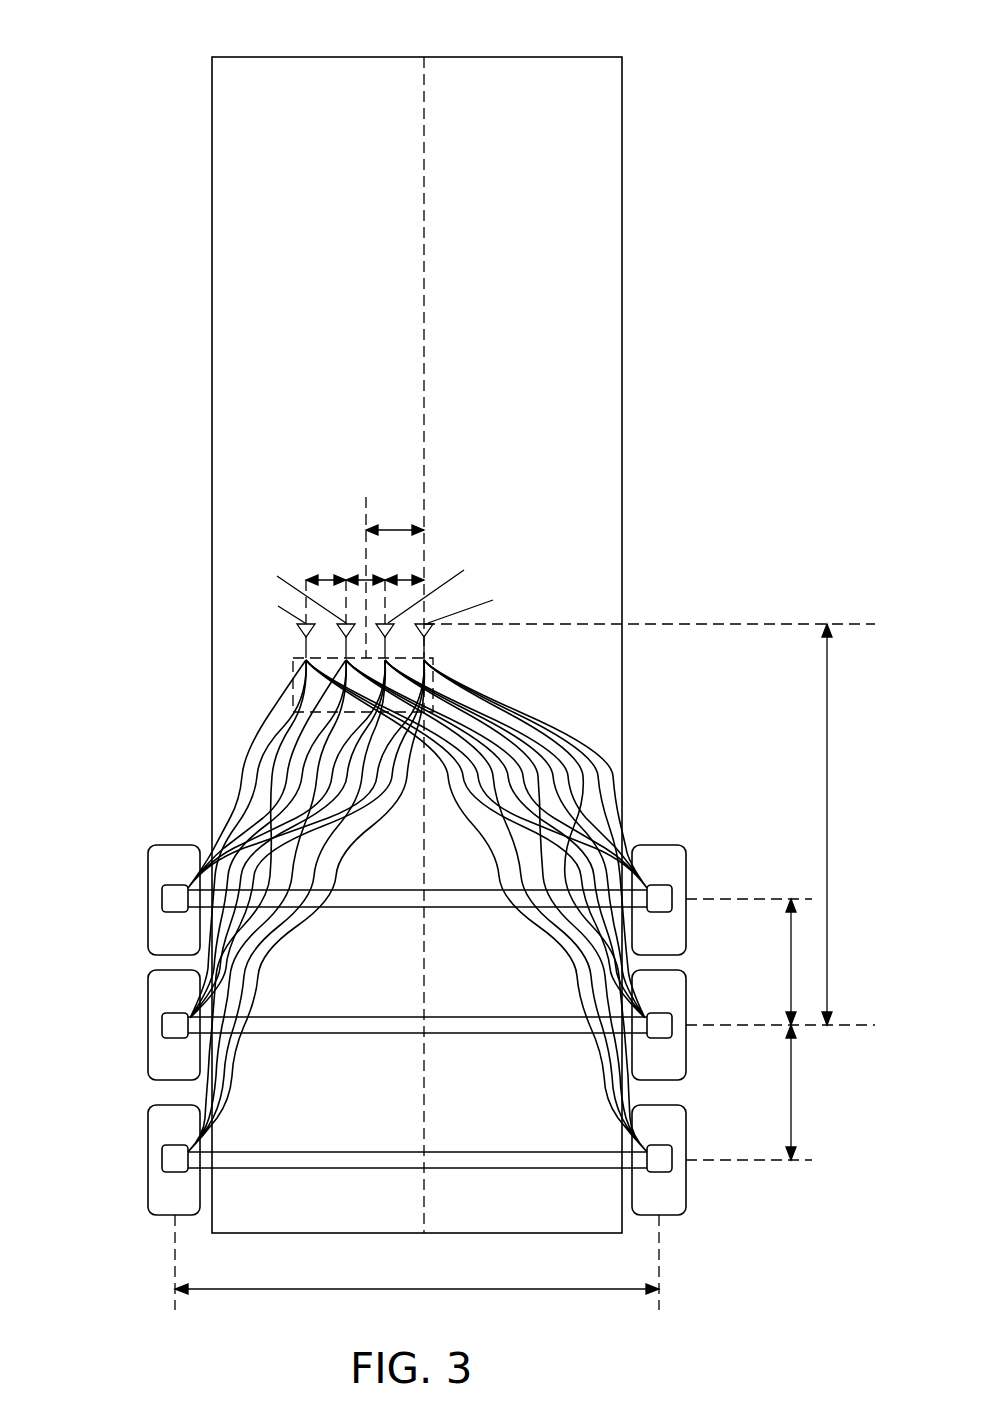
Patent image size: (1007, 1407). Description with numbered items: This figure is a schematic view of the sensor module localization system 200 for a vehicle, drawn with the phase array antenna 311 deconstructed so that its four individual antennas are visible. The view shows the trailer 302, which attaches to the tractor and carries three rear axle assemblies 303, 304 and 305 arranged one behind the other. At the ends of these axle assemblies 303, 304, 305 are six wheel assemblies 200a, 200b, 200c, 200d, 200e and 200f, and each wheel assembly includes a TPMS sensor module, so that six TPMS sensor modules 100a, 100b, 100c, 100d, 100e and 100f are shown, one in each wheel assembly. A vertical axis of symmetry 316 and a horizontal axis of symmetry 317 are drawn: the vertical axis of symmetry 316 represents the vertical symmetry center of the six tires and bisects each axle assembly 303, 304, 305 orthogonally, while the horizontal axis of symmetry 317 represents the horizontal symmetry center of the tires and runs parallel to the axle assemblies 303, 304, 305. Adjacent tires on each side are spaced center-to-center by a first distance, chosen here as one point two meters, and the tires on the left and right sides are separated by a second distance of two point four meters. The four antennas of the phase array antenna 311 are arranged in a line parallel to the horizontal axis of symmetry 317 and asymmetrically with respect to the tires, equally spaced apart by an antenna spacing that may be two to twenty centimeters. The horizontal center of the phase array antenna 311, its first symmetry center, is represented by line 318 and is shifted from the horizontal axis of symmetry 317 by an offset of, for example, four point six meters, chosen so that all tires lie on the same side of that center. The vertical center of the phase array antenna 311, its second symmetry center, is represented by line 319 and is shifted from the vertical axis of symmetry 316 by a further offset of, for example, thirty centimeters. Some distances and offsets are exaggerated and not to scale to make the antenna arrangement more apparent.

The sensor module localization system 200 is at (106, 46).
The trailer 302 is at (622, 392).
The vertical axis of symmetry 316 is at (424, 188).
The horizontal center of the phase array antenna 318 is at (723, 622).
The vertical center of the phase array antenna 319 is at (364, 503).
The phase array antenna 311 is at (280, 642).
The rear axle assembly 303 is at (390, 909).
The rear axle assembly 304 is at (392, 1035).
The rear axle assembly 305 is at (390, 1170).
The horizontal axis of symmetry 317 is at (857, 1028).
The TPMS sensor module 100a is at (672, 897).
The TPMS sensor module 100b is at (162, 897).
The TPMS sensor module 100c is at (672, 1022).
The TPMS sensor module 100d is at (162, 1025).
The TPMS sensor module 100e is at (672, 1156).
The TPMS sensor module 100f is at (162, 1159).
The wheel assembly 200a is at (686, 940).
The wheel assembly 200b is at (148, 940).
The wheel assembly 200c is at (686, 1064).
The wheel assembly 200d is at (148, 1066).
The wheel assembly 200e is at (686, 1198).
The wheel assembly 200f is at (148, 1200).